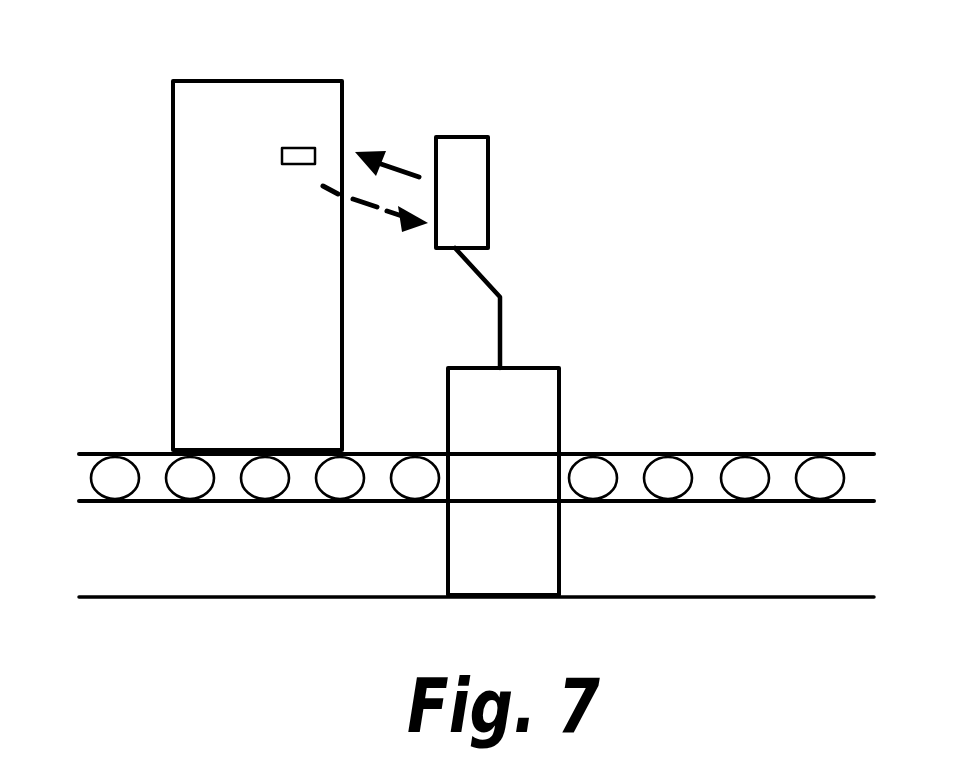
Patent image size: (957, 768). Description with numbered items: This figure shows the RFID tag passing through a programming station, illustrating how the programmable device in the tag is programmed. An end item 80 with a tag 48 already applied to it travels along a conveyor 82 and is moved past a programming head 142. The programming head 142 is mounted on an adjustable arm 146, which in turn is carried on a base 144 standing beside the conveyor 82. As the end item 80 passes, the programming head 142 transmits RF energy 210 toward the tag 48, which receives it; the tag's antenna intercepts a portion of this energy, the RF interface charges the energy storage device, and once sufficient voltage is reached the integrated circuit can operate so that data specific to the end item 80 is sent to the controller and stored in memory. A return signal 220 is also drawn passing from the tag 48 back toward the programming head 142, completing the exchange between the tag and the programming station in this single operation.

The tag 48 is at (303, 155).
The end item 80 is at (273, 238).
The conveyor 82 is at (147, 452).
The programming head 142 is at (488, 192).
The base 144 is at (527, 488).
The adjustable arm 146 is at (502, 303).
The RF energy 210 is at (397, 160).
The response signal 220 is at (375, 207).